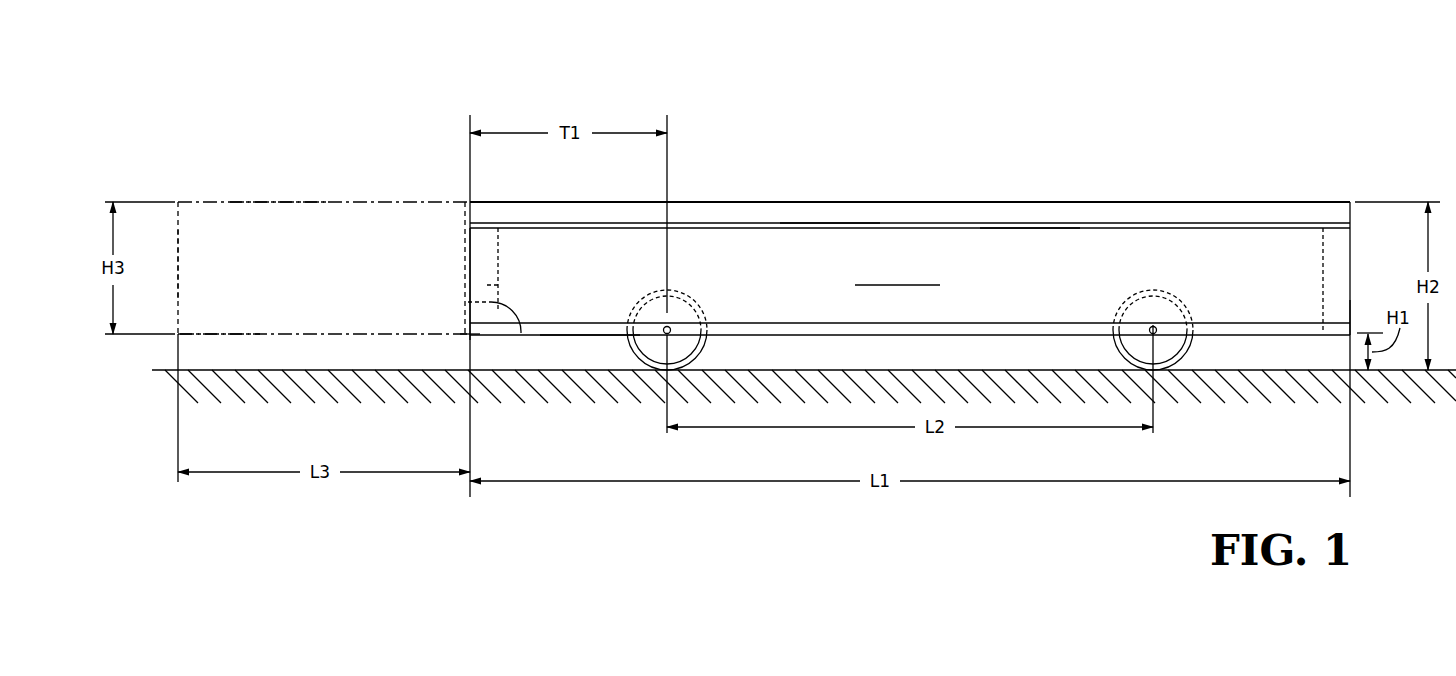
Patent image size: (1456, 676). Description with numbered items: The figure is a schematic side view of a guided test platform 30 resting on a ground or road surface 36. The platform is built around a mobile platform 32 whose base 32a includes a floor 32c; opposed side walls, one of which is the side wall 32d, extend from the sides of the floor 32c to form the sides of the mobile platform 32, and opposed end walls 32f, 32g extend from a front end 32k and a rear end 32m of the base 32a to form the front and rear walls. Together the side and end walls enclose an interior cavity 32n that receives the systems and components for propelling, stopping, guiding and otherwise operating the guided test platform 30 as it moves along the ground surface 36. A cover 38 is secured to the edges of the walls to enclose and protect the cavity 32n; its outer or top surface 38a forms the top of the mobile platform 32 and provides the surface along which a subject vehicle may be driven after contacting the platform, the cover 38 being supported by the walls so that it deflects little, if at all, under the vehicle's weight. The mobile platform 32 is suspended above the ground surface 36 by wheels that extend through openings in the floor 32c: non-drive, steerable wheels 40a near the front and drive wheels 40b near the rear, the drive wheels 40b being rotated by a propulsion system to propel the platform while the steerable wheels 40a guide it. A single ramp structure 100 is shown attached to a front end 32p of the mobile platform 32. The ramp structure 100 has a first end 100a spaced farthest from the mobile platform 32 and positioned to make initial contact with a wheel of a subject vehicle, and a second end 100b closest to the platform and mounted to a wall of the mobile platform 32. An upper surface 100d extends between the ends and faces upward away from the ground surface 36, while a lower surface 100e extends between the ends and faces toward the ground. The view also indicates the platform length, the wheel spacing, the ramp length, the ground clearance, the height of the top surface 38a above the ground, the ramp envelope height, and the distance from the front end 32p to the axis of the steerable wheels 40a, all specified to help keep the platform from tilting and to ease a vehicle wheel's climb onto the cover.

The guided test platform 30 is at (220, 177).
The mobile platform 32 is at (1352, 200).
The base 32a is at (490, 337).
The floor 32c is at (585, 336).
The side wall 32d is at (897, 274).
The end wall 32f is at (500, 285).
The end wall 32g is at (1325, 272).
The front end of base 32k is at (468, 335).
The rear end of base 32m is at (1340, 330).
The interior cavity 32n is at (1018, 265).
The front end of mobile platform 32p is at (470, 270).
The ground or road surface 36 is at (285, 372).
The cover 38 is at (812, 213).
The outer or top surface of cover 38a is at (745, 201).
The steerable wheels 40a is at (700, 350).
The drive wheels 40b is at (1180, 358).
The ramp structure 100 is at (345, 225).
The first end of ramp structure 100a is at (178, 265).
The second end of ramp structure 100b is at (522, 334).
The upper surface of ramp structure 100d is at (280, 202).
The lower surface of ramp structure 100e is at (207, 338).